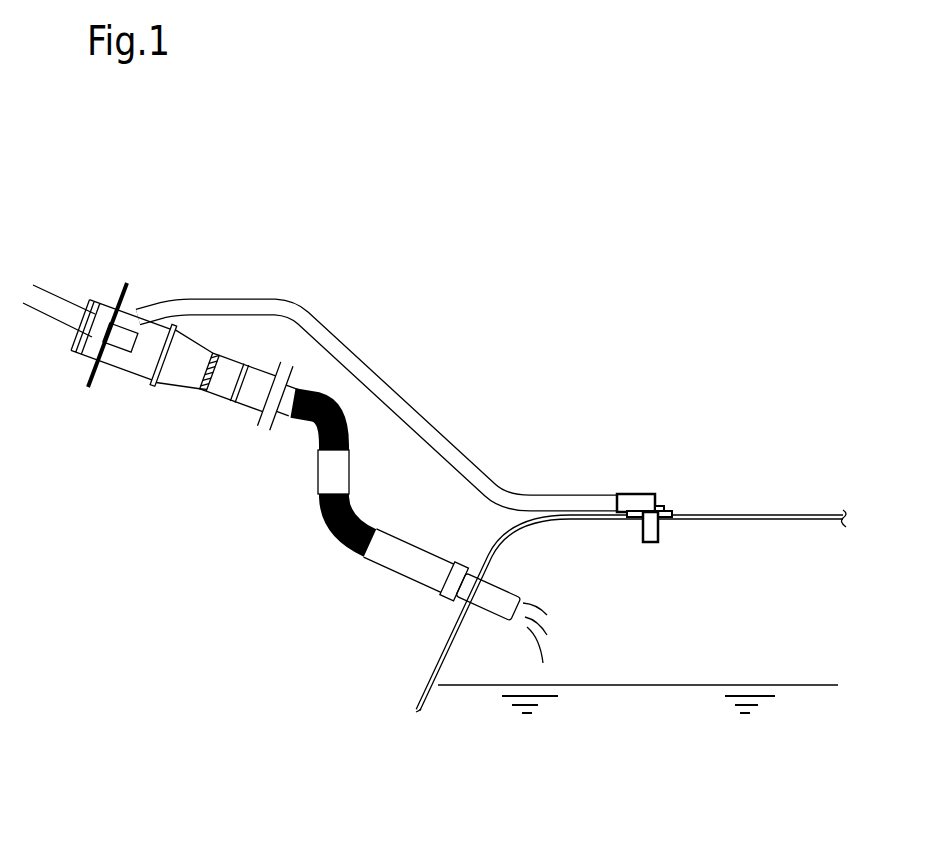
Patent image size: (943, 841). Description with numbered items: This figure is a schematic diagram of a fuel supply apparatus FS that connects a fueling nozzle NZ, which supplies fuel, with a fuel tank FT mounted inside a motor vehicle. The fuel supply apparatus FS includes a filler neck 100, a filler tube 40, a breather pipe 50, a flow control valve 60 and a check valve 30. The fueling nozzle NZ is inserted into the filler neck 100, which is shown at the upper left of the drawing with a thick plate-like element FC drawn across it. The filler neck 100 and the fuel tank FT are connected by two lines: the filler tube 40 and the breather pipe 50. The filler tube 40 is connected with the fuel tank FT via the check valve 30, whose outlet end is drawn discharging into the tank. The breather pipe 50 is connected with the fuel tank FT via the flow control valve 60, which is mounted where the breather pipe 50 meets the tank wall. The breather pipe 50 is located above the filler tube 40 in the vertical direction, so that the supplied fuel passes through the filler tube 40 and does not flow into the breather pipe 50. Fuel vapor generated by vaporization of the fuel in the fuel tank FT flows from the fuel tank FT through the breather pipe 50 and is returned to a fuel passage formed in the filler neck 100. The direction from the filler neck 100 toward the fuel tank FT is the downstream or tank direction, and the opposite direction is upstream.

The fuel supply apparatus FS is at (351, 438).
The fueling nozzle NZ is at (67, 297).
The fuel cap FC is at (75, 338).
The filler neck 100 is at (143, 373).
The breather pipe 50 is at (430, 424).
The filler tube 40 is at (318, 473).
The check valve 30 is at (517, 617).
The flow control valve 60 is at (641, 492).
The fuel tank FT is at (798, 517).